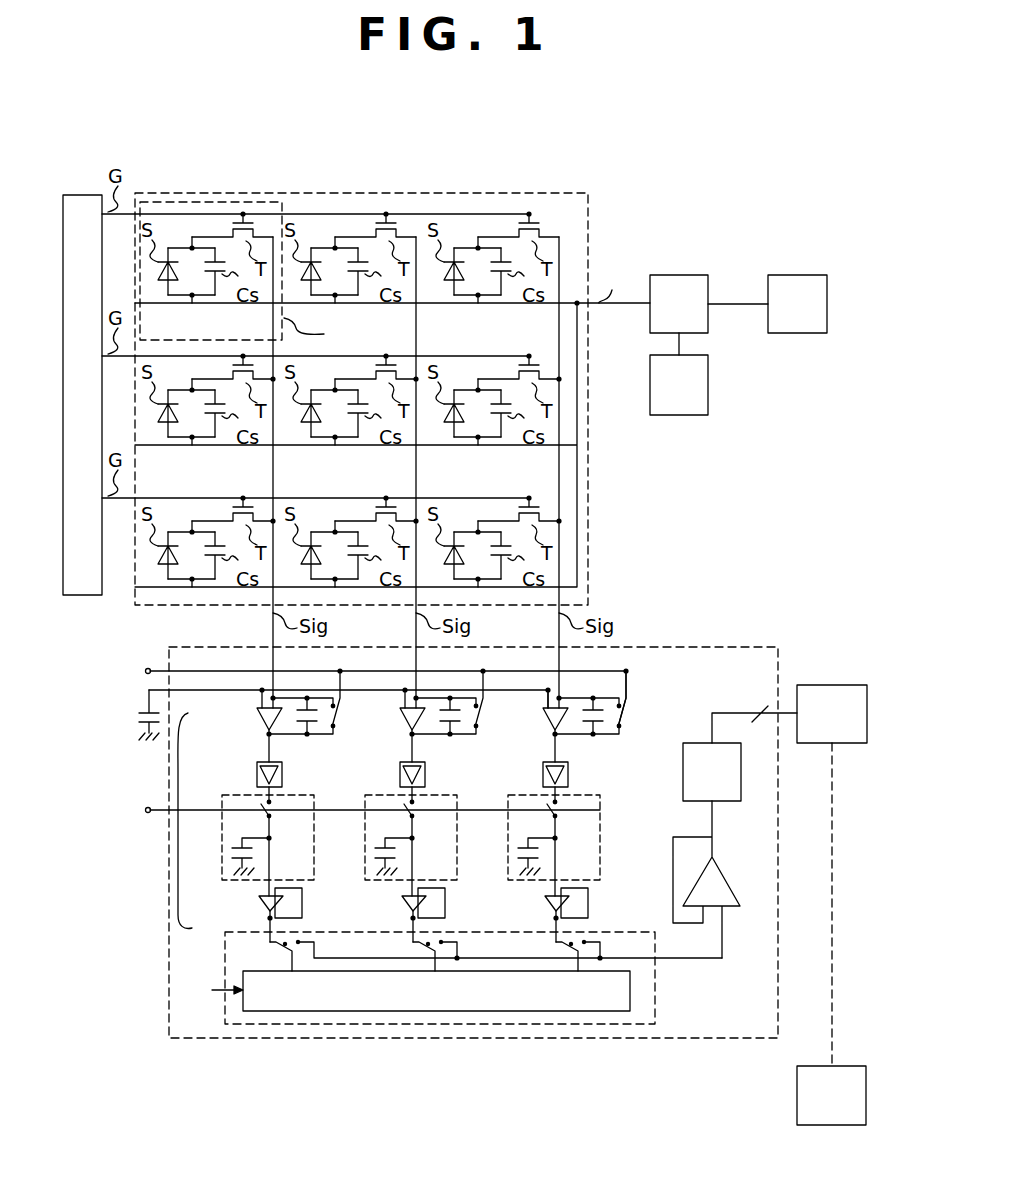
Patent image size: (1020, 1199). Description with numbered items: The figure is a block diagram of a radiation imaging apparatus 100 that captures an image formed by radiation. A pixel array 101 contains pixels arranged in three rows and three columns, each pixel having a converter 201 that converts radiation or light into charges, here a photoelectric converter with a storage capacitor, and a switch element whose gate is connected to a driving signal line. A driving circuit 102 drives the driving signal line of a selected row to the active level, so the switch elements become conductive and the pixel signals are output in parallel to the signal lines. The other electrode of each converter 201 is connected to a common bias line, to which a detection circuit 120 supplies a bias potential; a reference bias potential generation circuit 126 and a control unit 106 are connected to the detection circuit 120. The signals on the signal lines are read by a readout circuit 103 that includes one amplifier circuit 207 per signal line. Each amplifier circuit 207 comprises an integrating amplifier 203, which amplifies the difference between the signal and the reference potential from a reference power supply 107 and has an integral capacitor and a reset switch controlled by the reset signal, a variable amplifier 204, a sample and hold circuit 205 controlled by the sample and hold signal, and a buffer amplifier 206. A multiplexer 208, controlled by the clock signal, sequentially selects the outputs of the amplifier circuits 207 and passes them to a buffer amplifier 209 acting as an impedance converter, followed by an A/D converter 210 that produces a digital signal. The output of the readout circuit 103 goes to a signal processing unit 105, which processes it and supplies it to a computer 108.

The radiation imaging apparatus 100 is at (427, 1079).
The pixel array 101 is at (490, 193).
The driving circuit 102 is at (77, 195).
The readout circuit 103 is at (167, 928).
The signal processing unit 105 is at (855, 667).
The control unit 106 is at (812, 275).
The reference power supply 107 is at (138, 727).
The computer 108 is at (849, 1067).
The detection circuit 120 is at (695, 275).
The reference bias potential generation circuit 126 is at (708, 383).
The converter 201 is at (176, 311).
The integrating amplifier 203 is at (258, 718).
The variable amplifier 204 is at (257, 775).
The sample and hold circuit 205 is at (252, 881).
The buffer amplifier 206 is at (264, 907).
The amplifier circuit 207 is at (168, 822).
The multiplexer 208 is at (656, 1005).
The buffer amplifier 209 is at (752, 864).
The A/D converter 210 is at (694, 769).